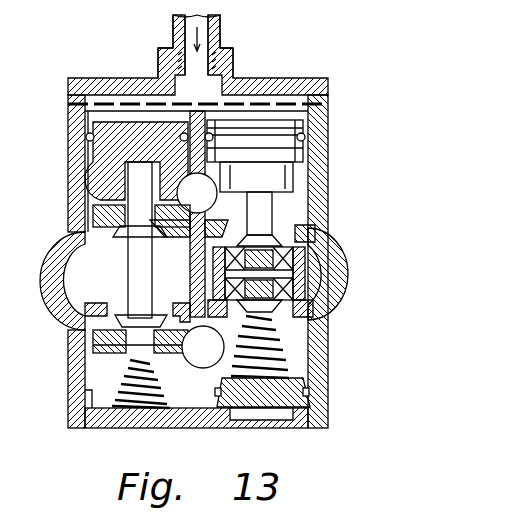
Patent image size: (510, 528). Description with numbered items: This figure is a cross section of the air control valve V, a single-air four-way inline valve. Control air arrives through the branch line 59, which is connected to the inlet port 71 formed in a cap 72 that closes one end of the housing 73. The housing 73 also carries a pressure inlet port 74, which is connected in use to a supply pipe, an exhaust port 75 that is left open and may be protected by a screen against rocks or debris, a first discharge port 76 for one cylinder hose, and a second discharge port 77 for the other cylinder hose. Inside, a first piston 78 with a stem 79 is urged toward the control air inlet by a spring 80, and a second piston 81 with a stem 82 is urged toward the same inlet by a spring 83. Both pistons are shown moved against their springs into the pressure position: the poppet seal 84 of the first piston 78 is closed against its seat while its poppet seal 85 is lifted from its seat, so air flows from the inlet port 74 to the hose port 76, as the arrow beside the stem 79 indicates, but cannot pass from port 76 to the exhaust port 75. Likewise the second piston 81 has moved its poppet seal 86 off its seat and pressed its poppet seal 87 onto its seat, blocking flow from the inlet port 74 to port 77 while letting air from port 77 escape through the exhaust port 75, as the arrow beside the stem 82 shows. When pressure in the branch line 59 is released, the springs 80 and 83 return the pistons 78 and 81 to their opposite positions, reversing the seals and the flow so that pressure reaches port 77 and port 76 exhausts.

The air branch line 59 is at (222, 16).
The inlet port 71 is at (215, 90).
The cap 72 is at (326, 80).
The housing 73 is at (85, 191).
The inlet port 74 is at (215, 356).
The exhaust port 75 is at (208, 205).
The first discharge port 76 is at (142, 276).
The second discharge port 77 is at (308, 276).
The first piston 78 is at (89, 137).
The stem 79 is at (62, 293).
The spring 80 is at (142, 392).
The second piston 81 is at (300, 158).
The stem 82 is at (262, 220).
The spring 83 is at (268, 360).
The poppet seal 84 is at (93, 225).
The poppet seal 85 is at (93, 340).
The poppet seal 86 is at (305, 240).
The poppet seal 87 is at (305, 320).
The control valve V is at (327, 193).